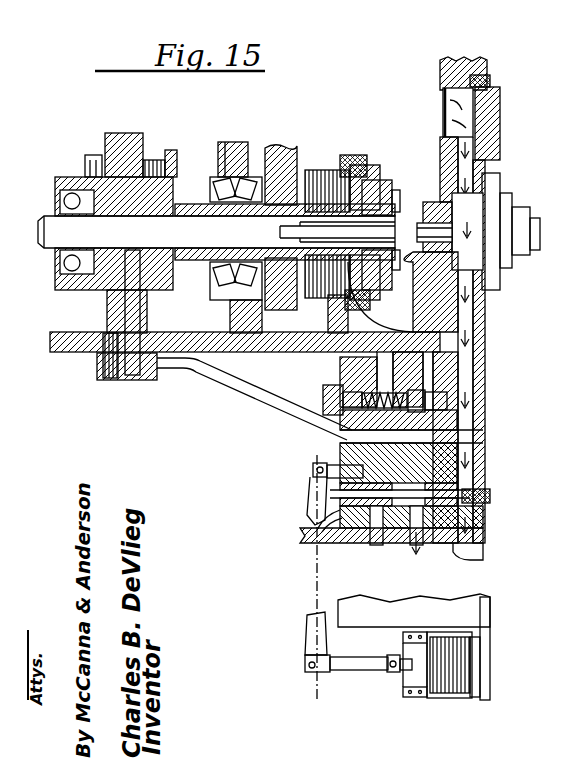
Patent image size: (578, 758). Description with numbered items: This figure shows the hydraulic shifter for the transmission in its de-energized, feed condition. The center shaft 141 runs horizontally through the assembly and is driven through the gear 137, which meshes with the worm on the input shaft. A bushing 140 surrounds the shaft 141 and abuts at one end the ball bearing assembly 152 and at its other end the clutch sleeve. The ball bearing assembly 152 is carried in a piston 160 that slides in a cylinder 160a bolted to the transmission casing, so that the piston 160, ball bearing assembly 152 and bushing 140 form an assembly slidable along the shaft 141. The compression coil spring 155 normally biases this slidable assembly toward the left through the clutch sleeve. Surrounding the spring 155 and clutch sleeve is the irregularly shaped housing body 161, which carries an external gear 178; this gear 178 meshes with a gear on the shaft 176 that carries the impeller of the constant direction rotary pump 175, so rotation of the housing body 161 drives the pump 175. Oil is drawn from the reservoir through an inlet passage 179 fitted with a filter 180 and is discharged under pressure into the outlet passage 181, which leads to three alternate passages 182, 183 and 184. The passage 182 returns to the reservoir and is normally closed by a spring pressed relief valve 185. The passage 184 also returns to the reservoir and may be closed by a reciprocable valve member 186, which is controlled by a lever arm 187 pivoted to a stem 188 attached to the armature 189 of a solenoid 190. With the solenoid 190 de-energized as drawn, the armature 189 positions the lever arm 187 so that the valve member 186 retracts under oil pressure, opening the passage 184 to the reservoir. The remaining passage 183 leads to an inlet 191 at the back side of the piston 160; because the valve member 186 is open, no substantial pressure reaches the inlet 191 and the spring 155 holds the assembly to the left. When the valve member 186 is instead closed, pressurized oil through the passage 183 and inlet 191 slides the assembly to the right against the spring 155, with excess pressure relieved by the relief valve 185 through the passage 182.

The gear 137 is at (280, 146).
The bushing 140 is at (190, 262).
The center shaft 141 is at (135, 233).
The ball bearing assembly 152 is at (178, 183).
The compression coil spring 155 is at (396, 205).
The piston 160 is at (157, 177).
The cylinder 160a is at (165, 176).
The housing body 161 is at (372, 172).
The rotary pump 175 is at (512, 252).
The shaft 176 is at (420, 232).
The external gear 178 is at (360, 156).
The inlet passage 179 is at (468, 100).
The filter 180 is at (445, 120).
The outlet passage 181 is at (466, 318).
The passage 182 is at (447, 418).
The passage 183 is at (440, 440).
The passage 184 is at (455, 480).
The relief valve 185 is at (435, 395).
The valve member 186 is at (330, 519).
The lever arm 187 is at (313, 500).
The stem 188 is at (352, 672).
The armature 189 is at (420, 672).
The solenoid 190 is at (468, 690).
The inlet 191 is at (85, 294).